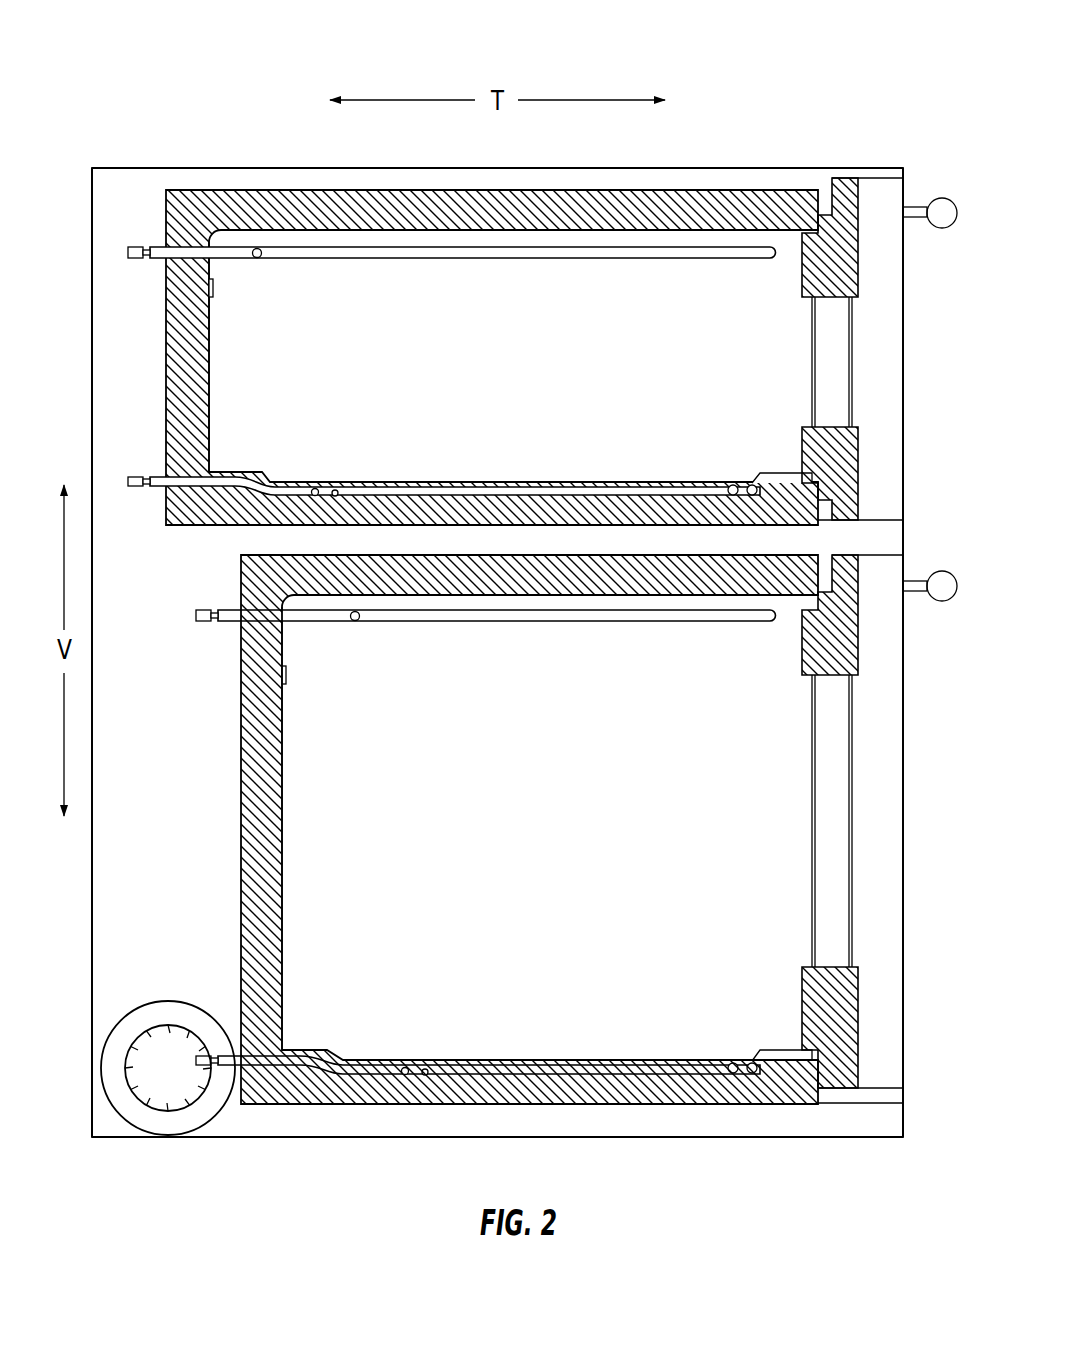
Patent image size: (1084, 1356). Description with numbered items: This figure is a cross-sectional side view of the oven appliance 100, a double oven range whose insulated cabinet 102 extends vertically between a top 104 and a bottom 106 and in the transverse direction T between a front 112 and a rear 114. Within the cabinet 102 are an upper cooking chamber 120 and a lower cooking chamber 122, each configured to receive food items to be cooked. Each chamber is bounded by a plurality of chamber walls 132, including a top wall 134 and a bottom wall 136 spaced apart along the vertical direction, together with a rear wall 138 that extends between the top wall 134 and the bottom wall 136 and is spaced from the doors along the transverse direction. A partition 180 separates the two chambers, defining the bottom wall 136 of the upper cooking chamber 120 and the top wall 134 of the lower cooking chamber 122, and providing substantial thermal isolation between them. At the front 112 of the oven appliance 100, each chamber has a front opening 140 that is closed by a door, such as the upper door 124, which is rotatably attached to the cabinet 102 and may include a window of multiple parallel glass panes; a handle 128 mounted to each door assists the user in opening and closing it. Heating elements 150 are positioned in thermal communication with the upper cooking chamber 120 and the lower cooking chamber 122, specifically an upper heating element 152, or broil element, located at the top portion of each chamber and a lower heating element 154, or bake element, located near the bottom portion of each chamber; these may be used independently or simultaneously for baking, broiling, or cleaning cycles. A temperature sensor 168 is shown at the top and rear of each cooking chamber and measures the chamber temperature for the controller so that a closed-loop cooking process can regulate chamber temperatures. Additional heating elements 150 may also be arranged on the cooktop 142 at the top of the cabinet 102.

The oven appliance 100 is at (88, 78).
The cabinet 102 is at (90, 310).
The top 104 is at (84, 166).
The bottom 106 is at (84, 1132).
The front 112 is at (900, 1142).
The rear 114 is at (93, 1144).
The upper cooking chamber 120 is at (515, 358).
The lower cooking chamber 122 is at (555, 841).
The upper door 124 is at (890, 333).
The handle 128 is at (942, 197).
The chamber walls 132 is at (214, 382).
The top wall 134 is at (652, 233).
The bottom wall 136 is at (622, 479).
The rear wall 138 is at (212, 342).
The front opening 140 is at (788, 358).
The cooktop 142 is at (791, 157).
The heating elements 150 is at (470, 661).
The upper heating element 152 is at (512, 259).
The lower heating element 154 is at (340, 496).
The temperature sensor 168 is at (213, 288).
The partition 180 is at (778, 540).